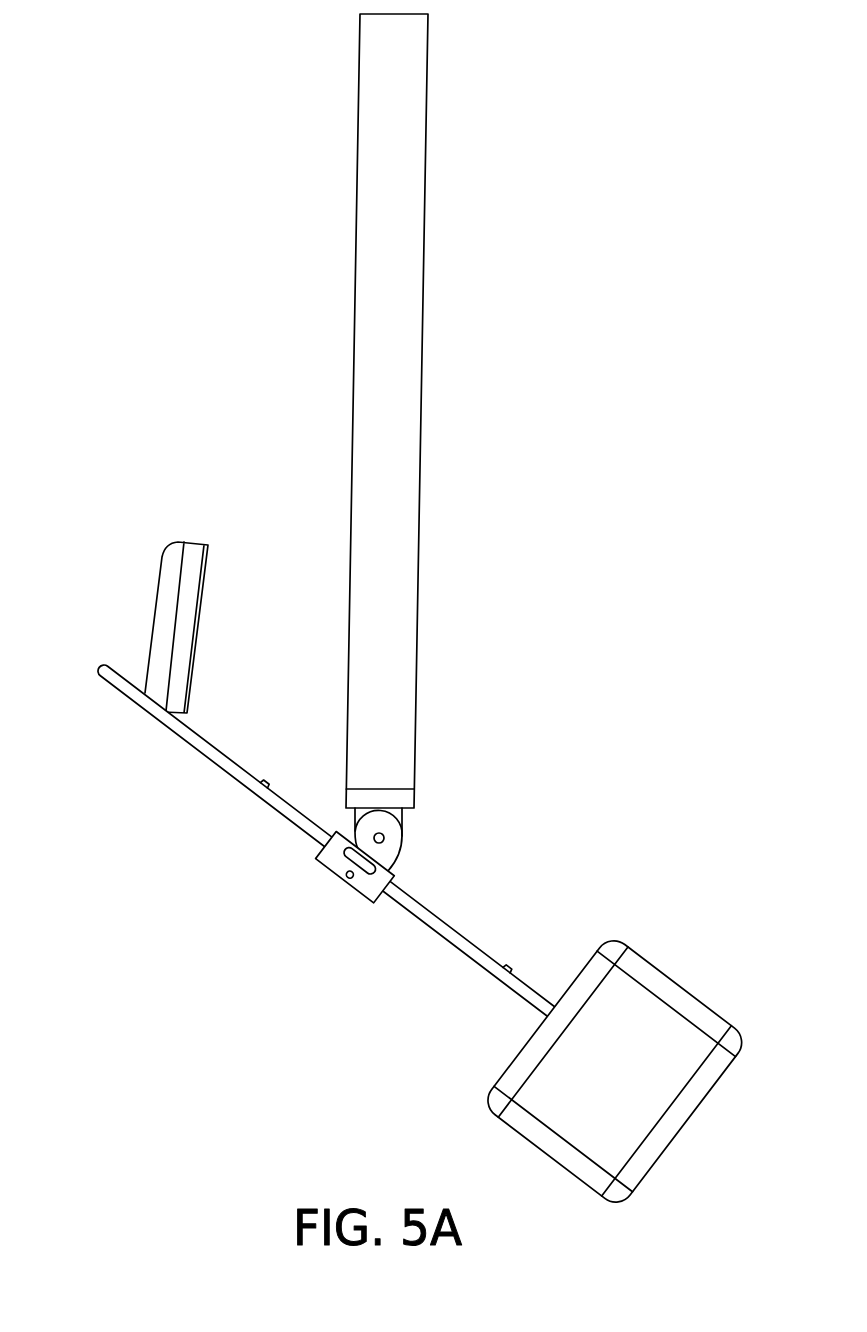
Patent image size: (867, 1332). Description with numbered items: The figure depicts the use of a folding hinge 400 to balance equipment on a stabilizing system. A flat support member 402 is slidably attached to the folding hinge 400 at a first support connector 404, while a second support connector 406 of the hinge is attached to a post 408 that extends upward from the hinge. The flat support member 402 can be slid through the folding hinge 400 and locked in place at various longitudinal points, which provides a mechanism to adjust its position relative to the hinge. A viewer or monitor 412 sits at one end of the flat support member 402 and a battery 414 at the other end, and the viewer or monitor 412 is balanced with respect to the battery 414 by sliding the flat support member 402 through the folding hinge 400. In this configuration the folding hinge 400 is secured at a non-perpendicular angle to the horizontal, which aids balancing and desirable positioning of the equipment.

The folding hinge 400 is at (414, 848).
The flat support member 402 is at (231, 765).
The first support connector 404 is at (318, 862).
The second support connector 406 is at (408, 798).
The post 408 is at (418, 605).
The viewer or monitor 412 is at (168, 598).
The battery 414 is at (633, 995).